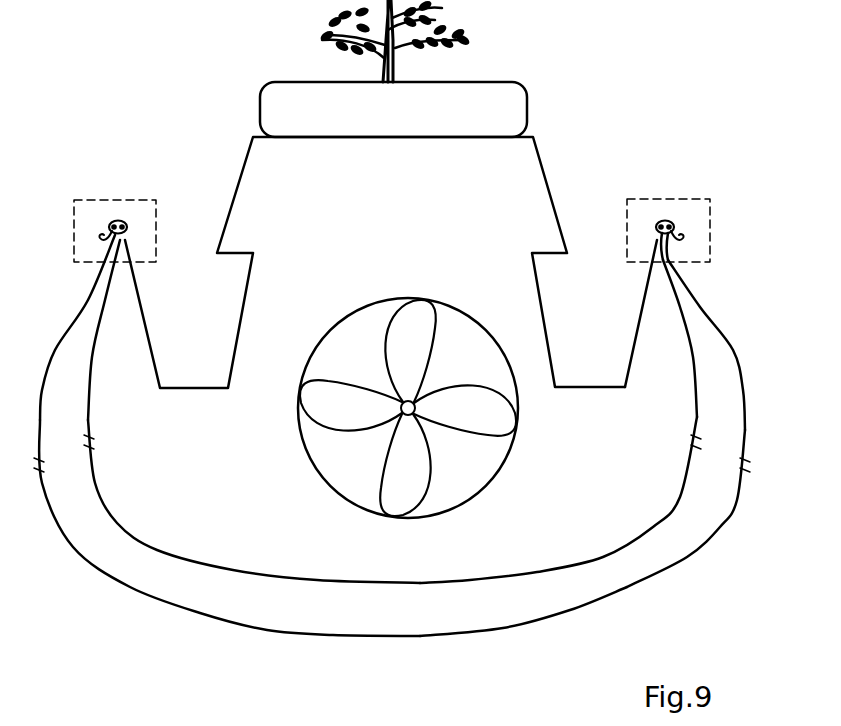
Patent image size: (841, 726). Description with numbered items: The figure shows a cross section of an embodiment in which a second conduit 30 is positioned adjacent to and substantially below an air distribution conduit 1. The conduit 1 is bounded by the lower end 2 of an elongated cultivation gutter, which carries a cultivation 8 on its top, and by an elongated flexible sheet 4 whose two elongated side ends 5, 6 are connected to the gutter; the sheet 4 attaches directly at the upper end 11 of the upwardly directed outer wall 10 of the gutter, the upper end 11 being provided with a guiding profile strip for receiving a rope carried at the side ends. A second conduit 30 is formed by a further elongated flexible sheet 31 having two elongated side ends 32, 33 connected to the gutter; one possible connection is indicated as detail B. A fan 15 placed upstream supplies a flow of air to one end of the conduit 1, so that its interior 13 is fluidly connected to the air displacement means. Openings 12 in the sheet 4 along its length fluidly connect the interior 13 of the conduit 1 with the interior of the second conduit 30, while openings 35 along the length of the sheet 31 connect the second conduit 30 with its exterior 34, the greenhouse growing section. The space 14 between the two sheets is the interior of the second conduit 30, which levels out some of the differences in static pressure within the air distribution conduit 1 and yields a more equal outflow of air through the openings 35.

The air distribution conduit 1 is at (672, 400).
The lower end 2 is at (275, 141).
The elongated flexible sheet 4 is at (677, 497).
The elongated side end 5 is at (118, 220).
The elongated side end 6 is at (665, 222).
The cultivation 8 is at (475, 93).
The outer wall 10 is at (640, 305).
The upper end 11 is at (660, 224).
The openings 12 is at (695, 441).
The interior 13 is at (528, 547).
The strap band 14 is at (573, 602).
The fan 15 is at (454, 497).
The second conduit 30 is at (657, 558).
The further elongated flexible sheet 31 is at (700, 550).
The elongated side end 32 is at (112, 222).
The elongated side end 33 is at (677, 226).
The exterior 34 is at (574, 658).
The openings 35 is at (749, 463).
The detail B is at (707, 199).